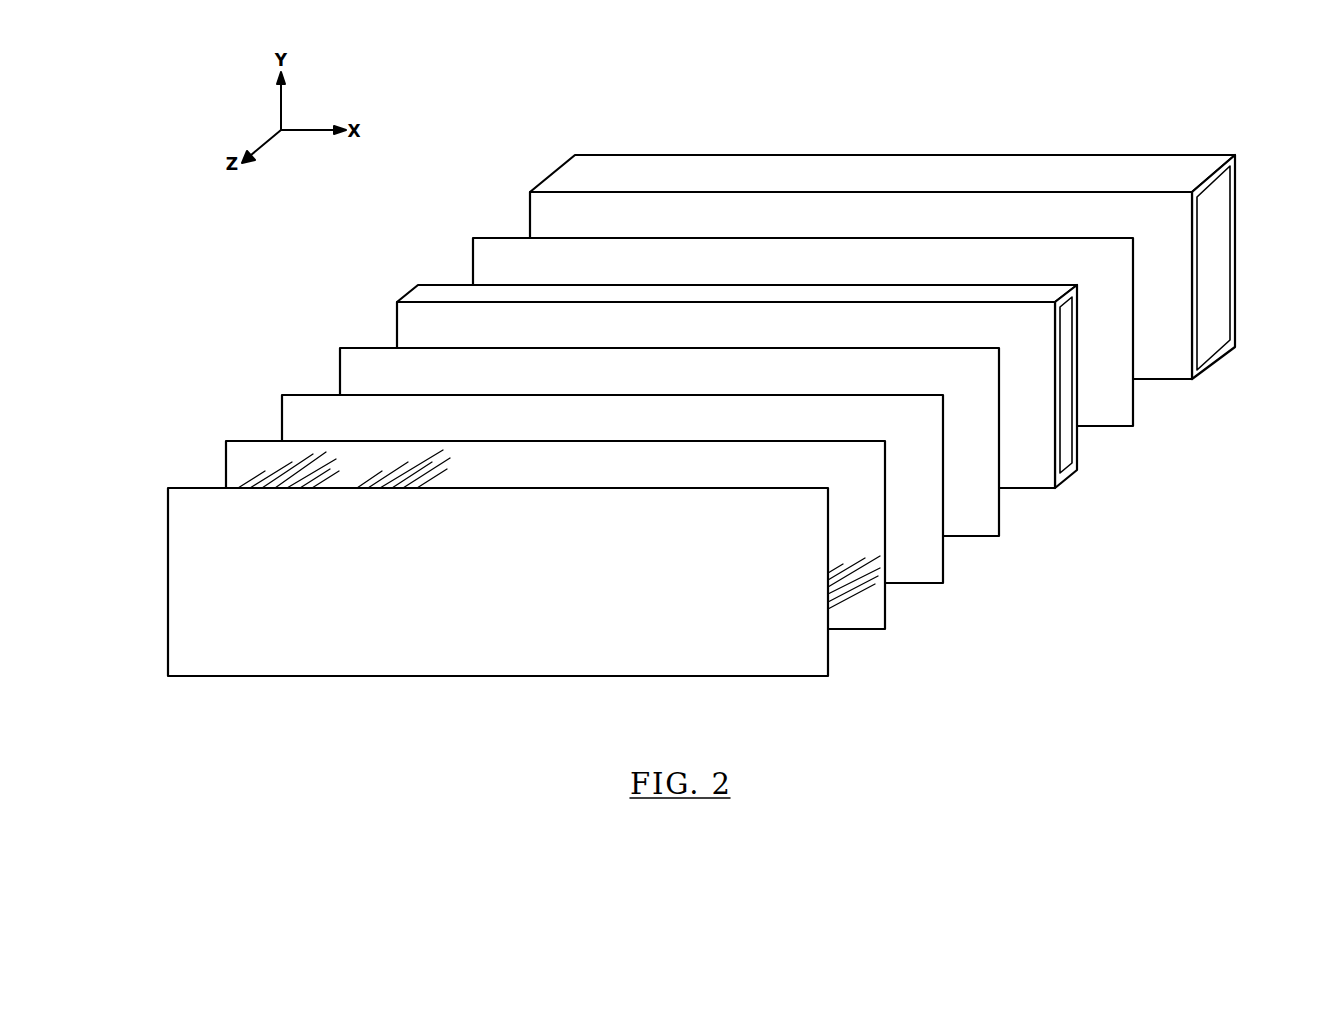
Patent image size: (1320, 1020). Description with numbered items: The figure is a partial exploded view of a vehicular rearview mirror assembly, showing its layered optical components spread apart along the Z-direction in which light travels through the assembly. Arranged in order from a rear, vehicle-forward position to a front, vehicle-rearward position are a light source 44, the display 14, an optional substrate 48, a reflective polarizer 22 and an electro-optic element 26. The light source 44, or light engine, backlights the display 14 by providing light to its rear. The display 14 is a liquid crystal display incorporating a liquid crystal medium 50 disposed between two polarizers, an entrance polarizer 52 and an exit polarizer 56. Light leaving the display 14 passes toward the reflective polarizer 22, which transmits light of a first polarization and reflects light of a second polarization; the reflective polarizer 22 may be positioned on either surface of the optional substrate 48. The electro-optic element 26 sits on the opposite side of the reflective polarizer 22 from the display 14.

The display 14 is at (469, 219).
The light source 44 is at (1170, 367).
The entrance polarizer 52 is at (1112, 415).
The liquid crystal medium 50 is at (1017, 477).
The exit polarizer 56 is at (962, 525).
The optional substrate 48 is at (932, 573).
The reflective polarizer 22 is at (842, 622).
The electro-optic element 26 is at (778, 667).